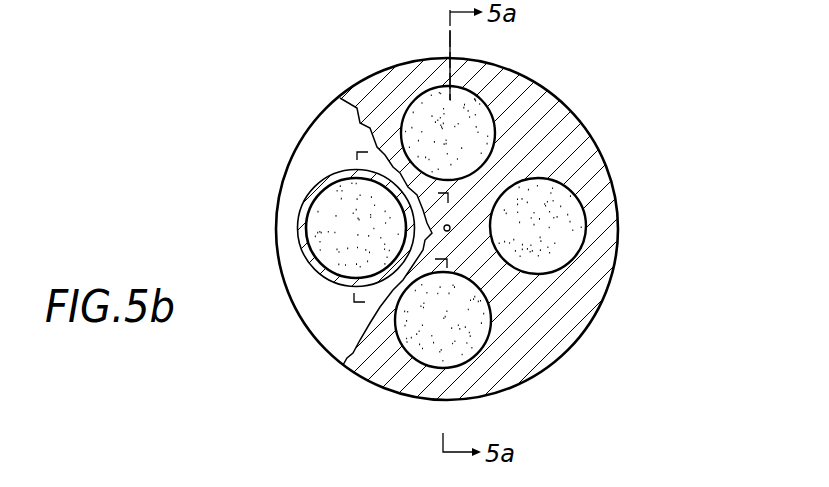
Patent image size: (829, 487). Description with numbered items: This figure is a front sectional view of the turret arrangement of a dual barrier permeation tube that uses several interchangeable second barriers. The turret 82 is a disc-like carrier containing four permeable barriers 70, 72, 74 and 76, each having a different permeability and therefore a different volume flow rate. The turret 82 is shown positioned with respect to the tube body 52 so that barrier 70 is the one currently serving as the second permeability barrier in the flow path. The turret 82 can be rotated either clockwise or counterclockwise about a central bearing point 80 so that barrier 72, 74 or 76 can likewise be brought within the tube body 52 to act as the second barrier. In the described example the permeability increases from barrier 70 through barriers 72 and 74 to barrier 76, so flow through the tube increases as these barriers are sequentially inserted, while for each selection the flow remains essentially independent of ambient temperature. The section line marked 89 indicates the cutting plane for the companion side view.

The tube body 52 is at (298, 227).
The first permeable barrier 70 is at (337, 258).
The second permeable barrier 72 is at (486, 135).
The third permeable barrier 74 is at (568, 220).
The fourth permeable barrier 76 is at (425, 348).
The bearing point 80 is at (450, 229).
The turret 82 is at (557, 93).
The section line 89 is at (447, 37).